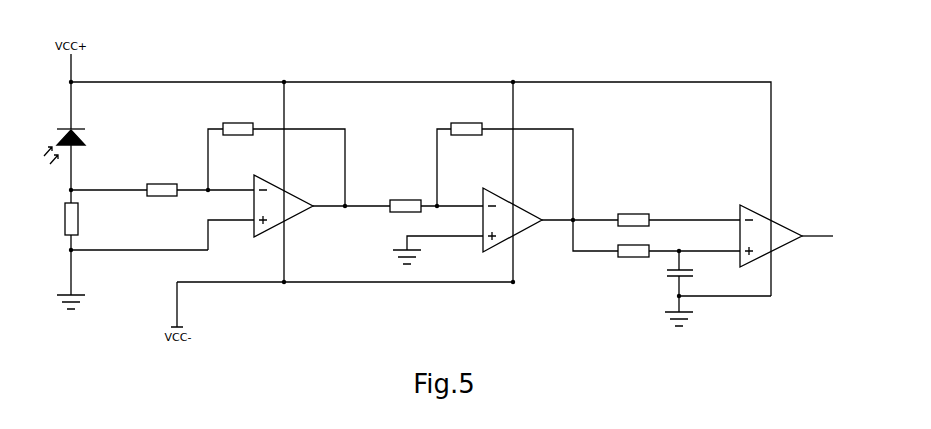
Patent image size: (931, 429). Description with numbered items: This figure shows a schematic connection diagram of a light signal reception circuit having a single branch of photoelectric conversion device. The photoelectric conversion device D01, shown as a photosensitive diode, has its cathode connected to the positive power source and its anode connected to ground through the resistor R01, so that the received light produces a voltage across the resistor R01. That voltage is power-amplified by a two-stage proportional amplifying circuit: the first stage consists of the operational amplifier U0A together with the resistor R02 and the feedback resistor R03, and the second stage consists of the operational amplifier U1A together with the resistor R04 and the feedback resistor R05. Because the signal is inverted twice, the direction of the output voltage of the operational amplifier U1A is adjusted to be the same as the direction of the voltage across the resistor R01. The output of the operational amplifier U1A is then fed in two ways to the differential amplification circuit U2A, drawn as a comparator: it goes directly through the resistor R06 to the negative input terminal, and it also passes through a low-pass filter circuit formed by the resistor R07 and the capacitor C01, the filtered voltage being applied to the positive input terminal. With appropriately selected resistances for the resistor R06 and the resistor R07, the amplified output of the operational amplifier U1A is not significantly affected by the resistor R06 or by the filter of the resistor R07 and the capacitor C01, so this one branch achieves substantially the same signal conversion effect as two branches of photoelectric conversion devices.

The photoelectric conversion device D01 is at (77, 146).
The resistor R01 is at (86, 219).
The resistor R02 is at (162, 183).
The resistor R03 is at (276, 158).
The resistor R04 is at (414, 199).
The resistor R05 is at (505, 165).
The resistor R06 is at (656, 213).
The resistor R07 is at (656, 238).
The capacitor C01 is at (718, 288).
The operational amplifier U0A is at (208, 218).
The operational amplifier U1A is at (483, 233).
The differential amplification circuit U2A is at (778, 236).